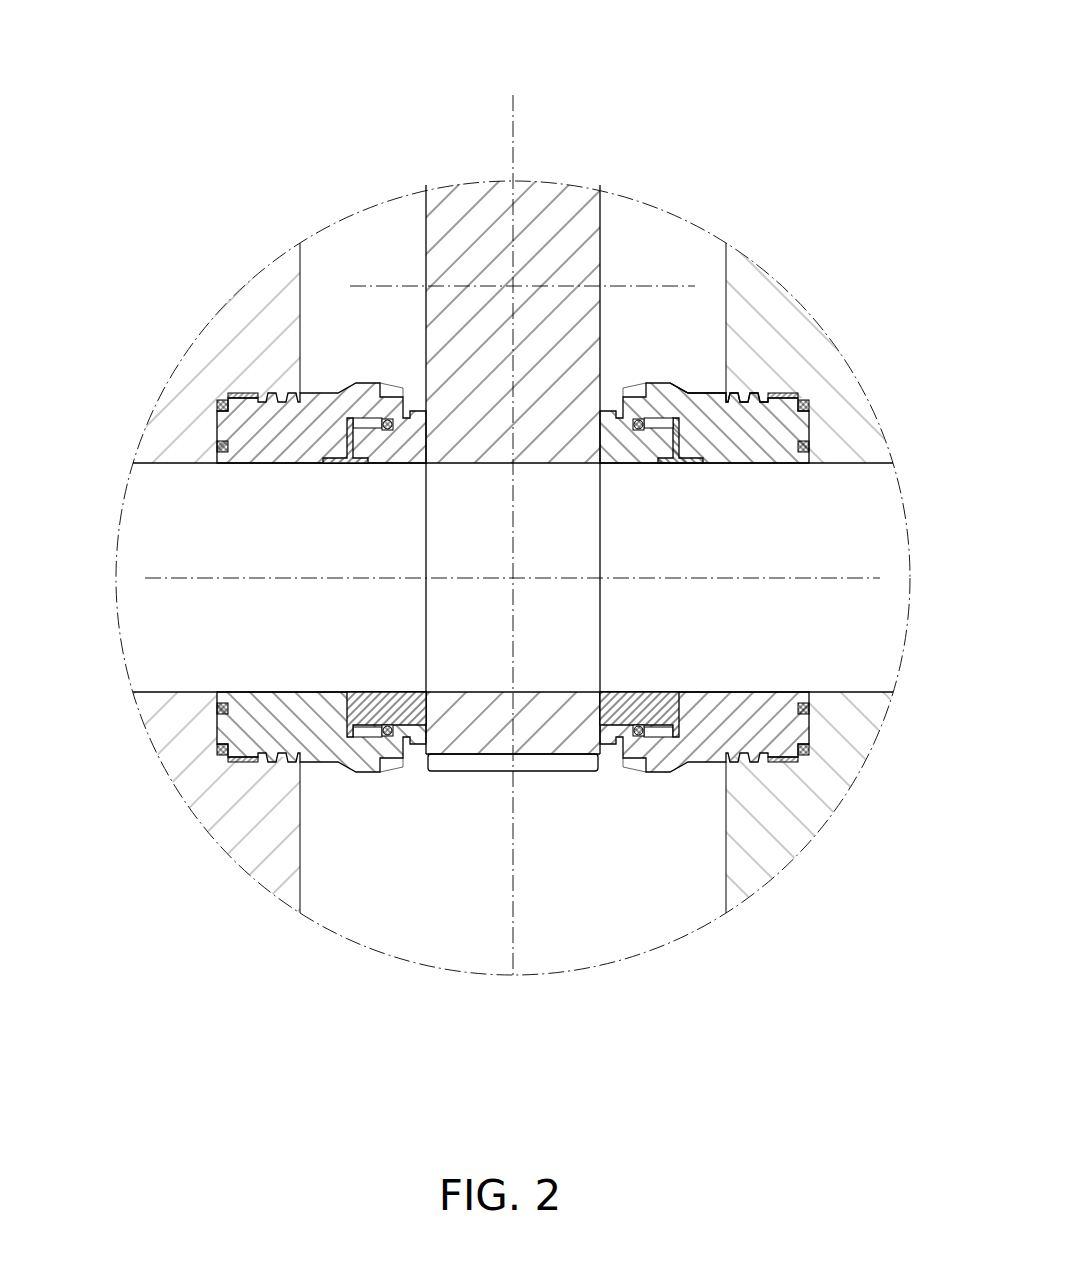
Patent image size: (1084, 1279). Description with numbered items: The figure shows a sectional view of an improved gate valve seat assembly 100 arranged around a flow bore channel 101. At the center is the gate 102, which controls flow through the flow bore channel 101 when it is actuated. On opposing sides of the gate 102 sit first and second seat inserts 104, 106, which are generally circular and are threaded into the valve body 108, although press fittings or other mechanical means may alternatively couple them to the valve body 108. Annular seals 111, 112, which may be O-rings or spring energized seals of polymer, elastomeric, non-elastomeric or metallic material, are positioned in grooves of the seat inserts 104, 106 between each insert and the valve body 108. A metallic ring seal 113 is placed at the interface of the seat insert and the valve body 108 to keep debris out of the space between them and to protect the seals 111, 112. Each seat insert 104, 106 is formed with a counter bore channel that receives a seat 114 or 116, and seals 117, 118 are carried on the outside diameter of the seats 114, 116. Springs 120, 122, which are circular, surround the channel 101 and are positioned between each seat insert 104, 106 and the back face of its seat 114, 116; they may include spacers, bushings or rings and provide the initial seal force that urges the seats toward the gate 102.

The gate valve seat assembly 100 is at (513, 492).
The flow bore channel 101 is at (175, 642).
The gate 102 is at (600, 286).
The first seat insert 104 is at (278, 430).
The second seat insert 106 is at (700, 743).
The valve body 108 is at (178, 750).
The annular seal 111 is at (215, 446).
The annular seal 112 is at (215, 405).
The metallic ring seal 113 is at (236, 395).
The seat 114 is at (418, 733).
The seat 116 is at (603, 728).
The seal 117 is at (641, 420).
The seal 118 is at (388, 420).
The spring 120 is at (720, 398).
The spring 122 is at (347, 430).